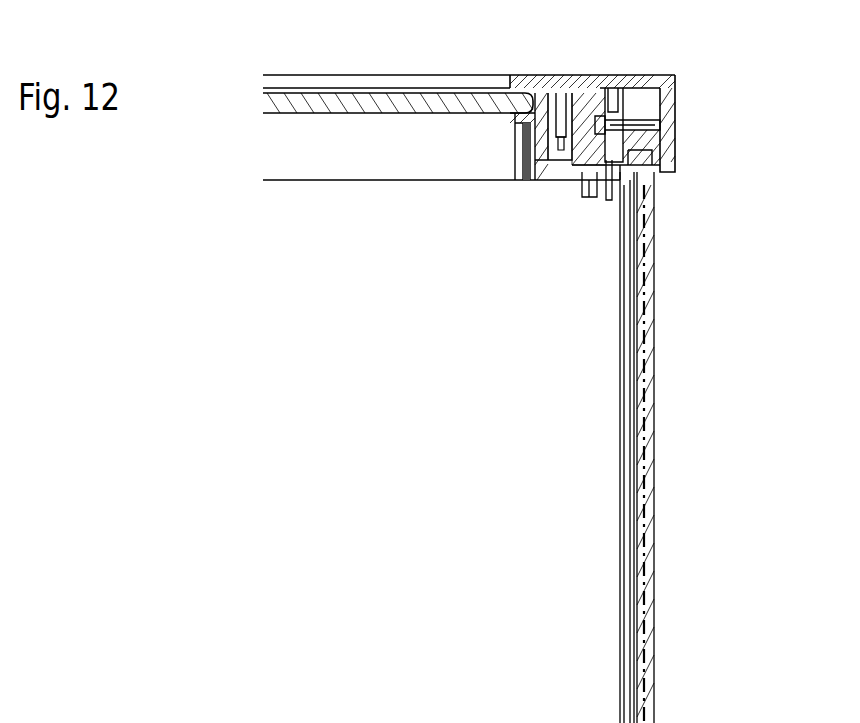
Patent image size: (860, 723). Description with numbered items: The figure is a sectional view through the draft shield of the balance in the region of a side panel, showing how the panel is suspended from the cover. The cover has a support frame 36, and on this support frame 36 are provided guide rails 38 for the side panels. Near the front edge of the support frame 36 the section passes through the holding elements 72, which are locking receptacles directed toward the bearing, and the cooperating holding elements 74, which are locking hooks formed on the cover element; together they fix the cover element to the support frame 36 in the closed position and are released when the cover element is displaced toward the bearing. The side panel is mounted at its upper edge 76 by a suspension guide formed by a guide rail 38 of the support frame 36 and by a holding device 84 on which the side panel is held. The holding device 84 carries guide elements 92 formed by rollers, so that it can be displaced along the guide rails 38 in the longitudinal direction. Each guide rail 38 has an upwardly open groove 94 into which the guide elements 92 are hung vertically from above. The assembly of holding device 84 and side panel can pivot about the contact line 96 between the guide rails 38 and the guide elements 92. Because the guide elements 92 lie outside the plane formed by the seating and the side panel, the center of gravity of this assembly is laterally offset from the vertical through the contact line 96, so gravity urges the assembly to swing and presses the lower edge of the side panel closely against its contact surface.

The support frame 36 is at (535, 178).
The holding elements 72 is at (558, 105).
The holding elements 74 is at (560, 150).
The upwardly open groove 94 is at (587, 150).
The guide elements 92 is at (611, 111).
The holding device 84 is at (645, 105).
The upper edge 76 is at (648, 149).
The guide rails 38 is at (631, 166).
The contact line 96 is at (611, 162).